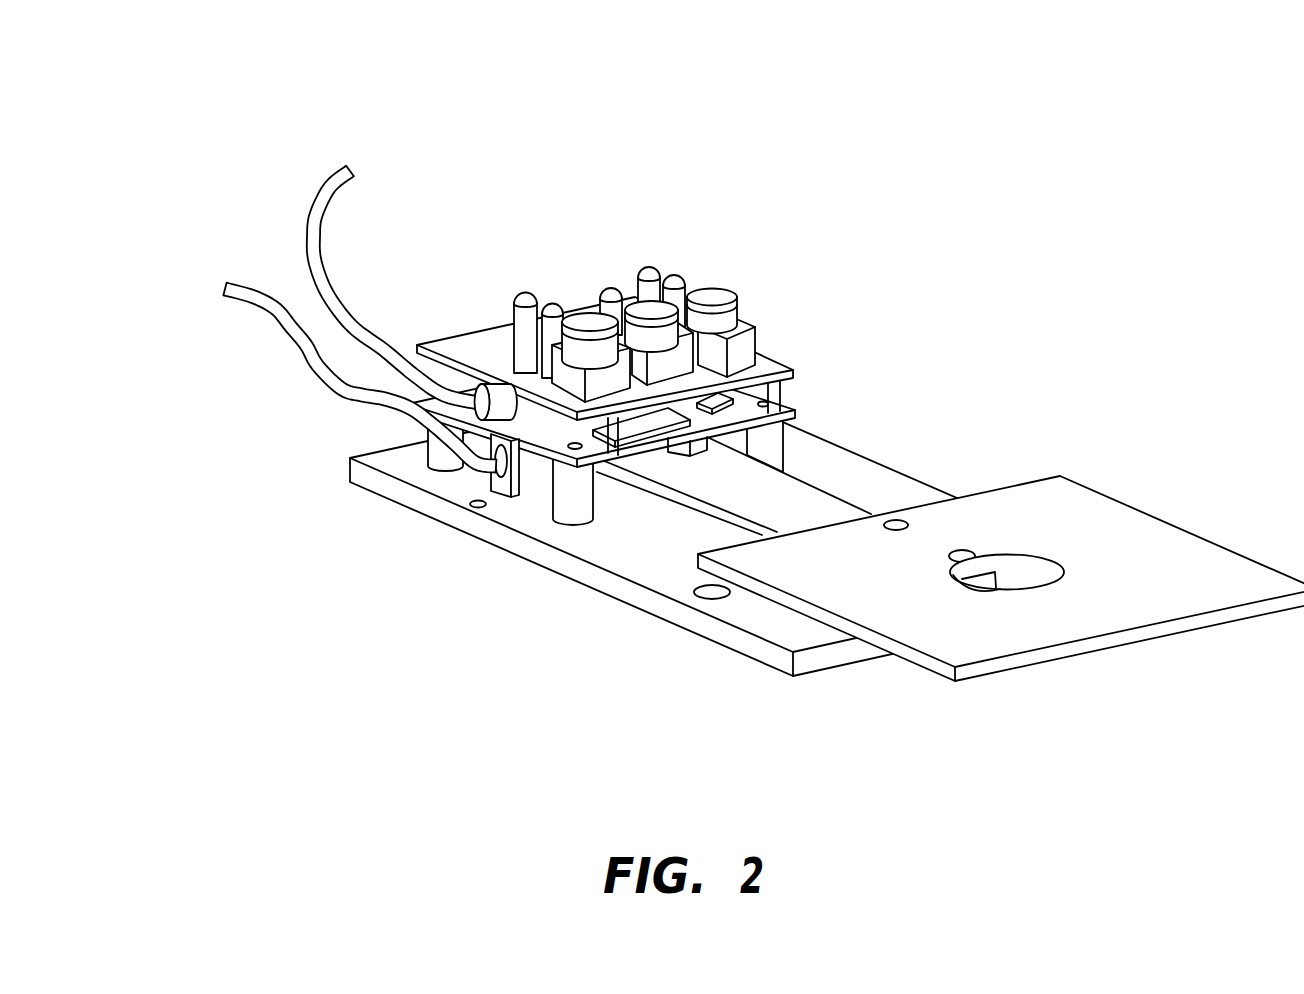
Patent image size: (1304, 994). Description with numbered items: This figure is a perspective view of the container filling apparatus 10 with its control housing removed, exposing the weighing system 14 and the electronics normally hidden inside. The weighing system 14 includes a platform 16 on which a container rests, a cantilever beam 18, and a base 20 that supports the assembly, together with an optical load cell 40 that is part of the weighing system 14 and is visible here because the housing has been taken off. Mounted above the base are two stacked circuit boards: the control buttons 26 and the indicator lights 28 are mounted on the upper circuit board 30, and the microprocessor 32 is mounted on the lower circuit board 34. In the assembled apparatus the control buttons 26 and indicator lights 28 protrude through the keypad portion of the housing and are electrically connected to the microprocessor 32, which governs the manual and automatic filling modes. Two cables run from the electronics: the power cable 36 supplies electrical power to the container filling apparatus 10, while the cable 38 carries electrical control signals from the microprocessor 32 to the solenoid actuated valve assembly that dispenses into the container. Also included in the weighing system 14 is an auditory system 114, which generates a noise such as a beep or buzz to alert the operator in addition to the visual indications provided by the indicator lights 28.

The container filling apparatus 10 is at (238, 100).
The weighing system 14 is at (392, 560).
The platform 16 is at (903, 620).
The beam 18 is at (835, 518).
The base 20 is at (767, 622).
The control buttons 26 is at (590, 317).
The indicator lights 28 is at (523, 295).
The circuit board 30 is at (768, 357).
The microprocessor 32 is at (640, 424).
The circuit board 34 is at (552, 433).
The power cable 36 is at (249, 292).
The cable 38 is at (330, 186).
The optical load cell 40 is at (712, 463).
The auditory system 114 is at (724, 396).